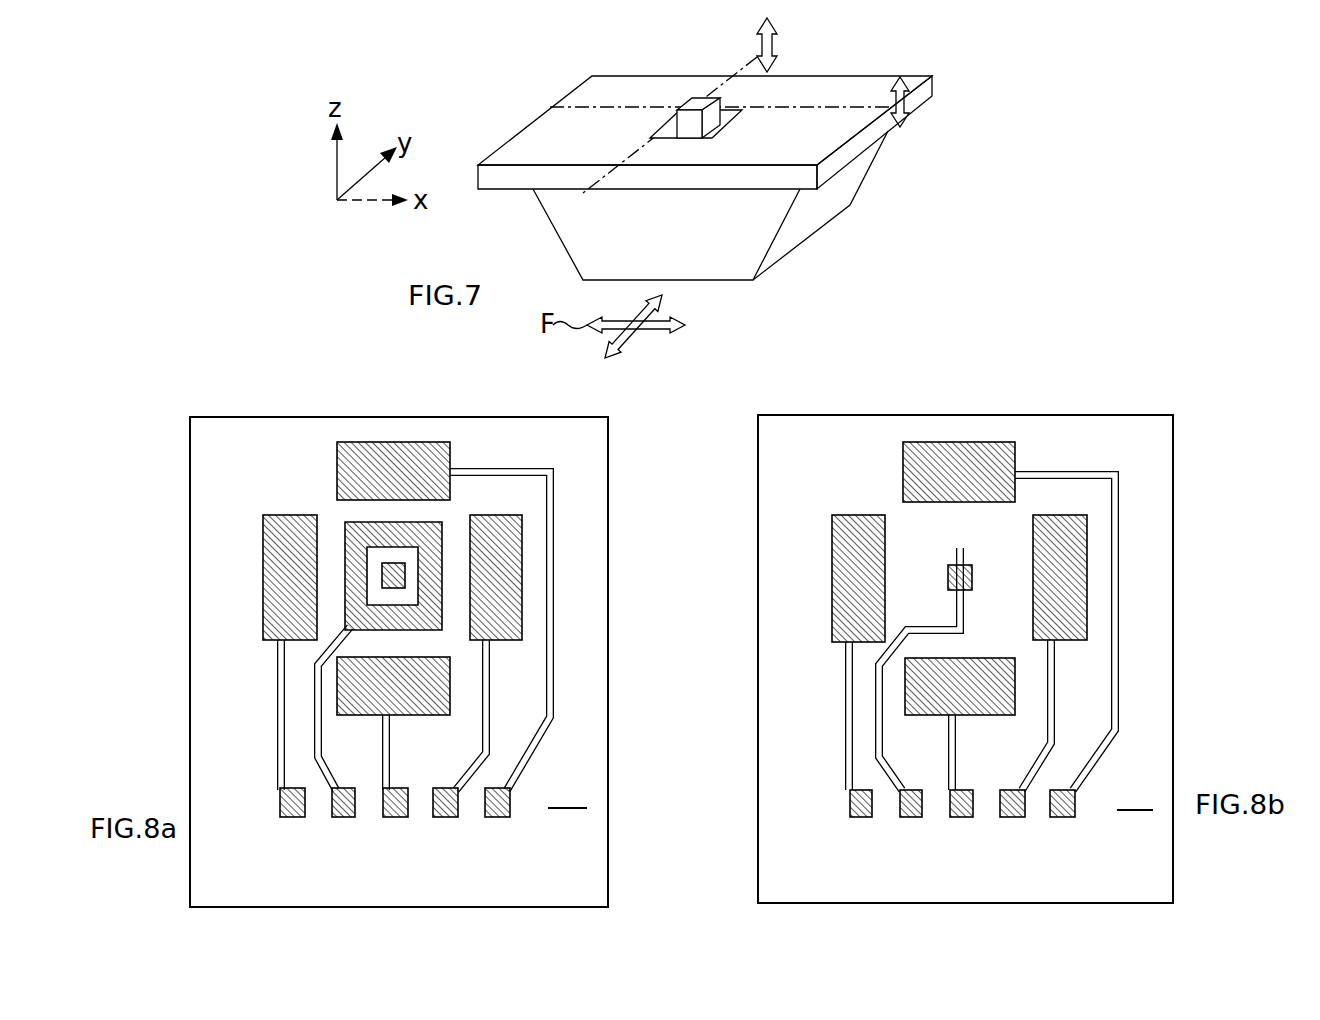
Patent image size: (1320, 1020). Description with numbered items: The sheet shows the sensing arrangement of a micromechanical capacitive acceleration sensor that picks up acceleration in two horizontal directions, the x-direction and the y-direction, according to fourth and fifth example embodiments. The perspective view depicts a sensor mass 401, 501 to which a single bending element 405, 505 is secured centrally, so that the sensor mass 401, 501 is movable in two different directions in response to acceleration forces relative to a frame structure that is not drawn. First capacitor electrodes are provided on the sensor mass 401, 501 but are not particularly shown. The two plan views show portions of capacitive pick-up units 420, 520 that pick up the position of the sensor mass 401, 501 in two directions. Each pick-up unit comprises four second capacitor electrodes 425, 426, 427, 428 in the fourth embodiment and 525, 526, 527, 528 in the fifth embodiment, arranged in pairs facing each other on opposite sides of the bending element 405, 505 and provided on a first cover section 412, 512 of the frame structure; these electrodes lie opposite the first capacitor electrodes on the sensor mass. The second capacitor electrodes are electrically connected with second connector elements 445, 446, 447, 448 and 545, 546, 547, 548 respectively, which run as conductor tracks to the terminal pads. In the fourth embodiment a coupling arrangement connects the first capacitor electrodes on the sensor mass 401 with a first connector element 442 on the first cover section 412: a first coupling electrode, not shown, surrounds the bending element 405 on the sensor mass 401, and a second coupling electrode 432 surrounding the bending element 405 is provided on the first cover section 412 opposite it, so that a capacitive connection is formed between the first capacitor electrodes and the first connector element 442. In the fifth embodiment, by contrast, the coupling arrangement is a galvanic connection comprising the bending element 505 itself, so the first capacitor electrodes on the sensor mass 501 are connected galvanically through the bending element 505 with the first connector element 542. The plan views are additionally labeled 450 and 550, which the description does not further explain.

In FIG. 7, the sensor mass 401 is at (757, 242).
In FIG. 7, the sensor mass 501 is at (705, 149).
In FIG. 7, the bending element 405 is at (727, 112).
In FIG. 8a, the bending element 405 is at (388, 563).
In FIG. 7, the bending element 505 is at (741, 123).
In FIG. 8b, the bending element 505 is at (957, 568).
In FIG. 8a, the first cover section 412 is at (203, 888).
In FIG. 8b, the first cover section 512 is at (1160, 878).
In FIG. 8a, the capacitive pick-up unit 420 is at (178, 555).
In FIG. 8b, the capacitive pick-up unit 520 is at (775, 560).
In FIG. 8a, the second capacitor electrode 425 is at (267, 632).
In FIG. 8b, the second capacitor electrode 525 is at (840, 607).
In FIG. 8a, the second capacitor electrode 426 is at (508, 513).
In FIG. 8b, the second capacitor electrode 526 is at (1082, 525).
In FIG. 8a, the second capacitor electrode 427 is at (338, 683).
In FIG. 8b, the second capacitor electrode 527 is at (905, 690).
In FIG. 8a, the second capacitor electrode 428 is at (450, 456).
In FIG. 8b, the second capacitor electrode 528 is at (1007, 455).
In FIG. 8a, the second coupling electrode 432 is at (447, 640).
In FIG. 8a, the first connector element 442 is at (330, 810).
In FIG. 8b, the first connector element 542 is at (898, 807).
In FIG. 8a, the second connector element 445 is at (278, 805).
In FIG. 8b, the second connector element 545 is at (848, 807).
In FIG. 8a, the second connector element 446 is at (435, 812).
In FIG. 8b, the second connector element 546 is at (1000, 808).
In FIG. 8a, the second connector element 447 is at (383, 812).
In FIG. 8b, the second connector element 547 is at (948, 808).
In FIG. 8a, the second connector element 448 is at (487, 812).
In FIG. 8b, the second connector element 548 is at (1052, 808).
In FIG. 8a, the sensor chip 450 is at (567, 794).
In FIG. 8b, the sensor chip 550 is at (1135, 796).